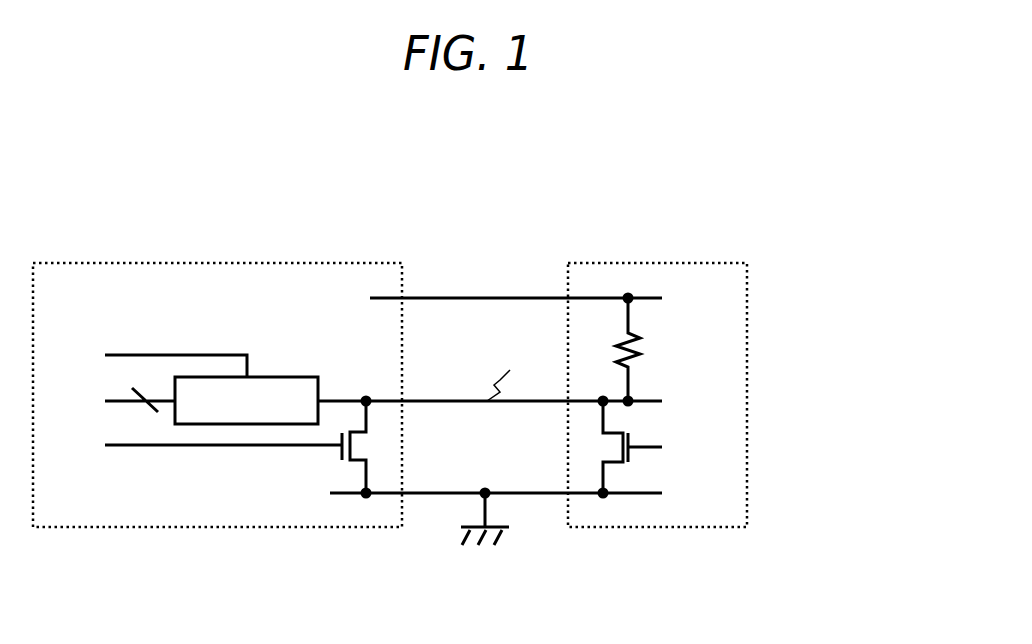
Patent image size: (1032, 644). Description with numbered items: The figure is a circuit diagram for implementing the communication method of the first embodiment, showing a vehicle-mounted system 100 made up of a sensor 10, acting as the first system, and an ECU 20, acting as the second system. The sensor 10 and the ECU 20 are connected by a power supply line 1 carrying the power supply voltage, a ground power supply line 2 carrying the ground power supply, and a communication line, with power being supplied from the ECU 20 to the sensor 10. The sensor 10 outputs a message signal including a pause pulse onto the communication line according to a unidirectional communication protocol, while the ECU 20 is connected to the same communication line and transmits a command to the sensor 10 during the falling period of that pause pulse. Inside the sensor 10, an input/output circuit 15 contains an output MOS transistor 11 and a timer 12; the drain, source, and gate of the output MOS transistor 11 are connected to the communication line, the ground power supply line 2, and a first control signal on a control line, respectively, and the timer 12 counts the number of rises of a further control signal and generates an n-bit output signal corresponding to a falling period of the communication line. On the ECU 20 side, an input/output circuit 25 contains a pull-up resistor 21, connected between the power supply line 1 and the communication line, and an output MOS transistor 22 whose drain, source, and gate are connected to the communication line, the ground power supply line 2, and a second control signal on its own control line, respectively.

The vehicle-mounted system 100 is at (462, 387).
The sensor 10 is at (218, 416).
The ECU 20 is at (730, 376).
The power supply line 1 is at (516, 270).
The ground power supply line 2 is at (496, 491).
The output MOS transistor 11 is at (322, 451).
The timer 12 is at (277, 379).
The input/output circuit 15 is at (279, 473).
The pull-up resistor 21 is at (669, 350).
The output MOS transistor 22 is at (649, 452).
The input/output circuit 25 is at (738, 387).